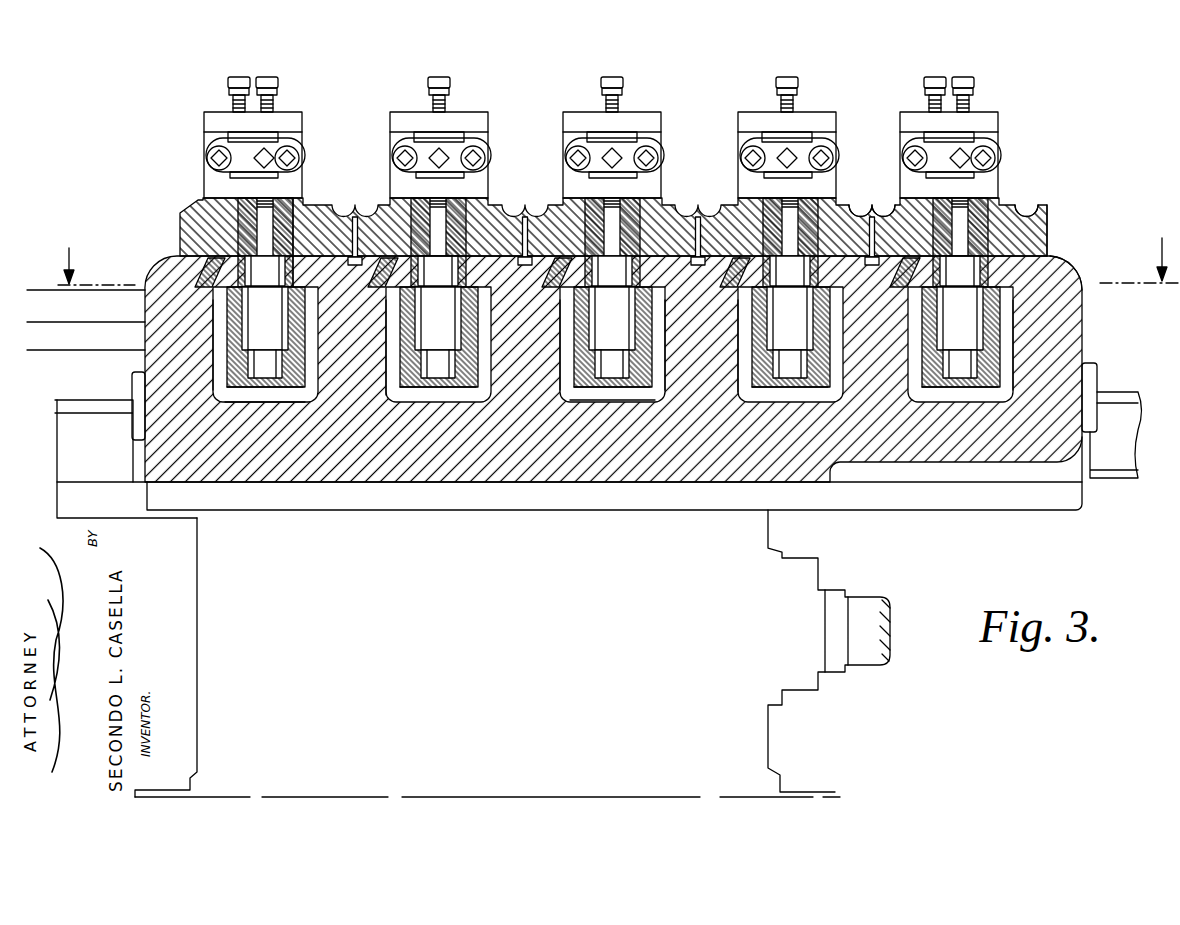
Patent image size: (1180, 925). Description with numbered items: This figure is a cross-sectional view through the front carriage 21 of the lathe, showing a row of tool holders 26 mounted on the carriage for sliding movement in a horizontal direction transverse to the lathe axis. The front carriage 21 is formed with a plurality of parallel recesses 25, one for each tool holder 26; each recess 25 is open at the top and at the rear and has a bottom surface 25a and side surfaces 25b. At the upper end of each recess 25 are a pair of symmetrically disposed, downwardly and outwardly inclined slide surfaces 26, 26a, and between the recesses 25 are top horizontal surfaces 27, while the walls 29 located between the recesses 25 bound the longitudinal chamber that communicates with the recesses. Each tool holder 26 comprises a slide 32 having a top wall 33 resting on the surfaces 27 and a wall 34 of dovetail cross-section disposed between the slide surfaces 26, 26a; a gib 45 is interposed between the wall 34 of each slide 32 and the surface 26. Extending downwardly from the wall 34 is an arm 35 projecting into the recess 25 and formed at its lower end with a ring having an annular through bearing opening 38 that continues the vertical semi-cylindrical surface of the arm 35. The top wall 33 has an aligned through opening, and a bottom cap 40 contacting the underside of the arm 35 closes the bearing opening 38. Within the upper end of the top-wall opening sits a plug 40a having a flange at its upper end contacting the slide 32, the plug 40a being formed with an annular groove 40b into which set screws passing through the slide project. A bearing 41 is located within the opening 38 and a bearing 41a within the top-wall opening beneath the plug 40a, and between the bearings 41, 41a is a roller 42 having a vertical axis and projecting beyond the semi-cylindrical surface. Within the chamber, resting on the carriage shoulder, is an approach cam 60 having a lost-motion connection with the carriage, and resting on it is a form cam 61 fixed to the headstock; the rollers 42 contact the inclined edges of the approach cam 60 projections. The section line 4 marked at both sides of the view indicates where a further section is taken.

The section line 4- 4 is at (619, 247).
The front carriage 21 is at (1068, 327).
The recess 25 is at (632, 392).
The bottom surface 25a is at (590, 398).
The side surfaces 25b is at (562, 400).
The tool holder 26 is at (553, 209).
The slide surface 26a is at (698, 258).
The top horizontal surfaces 27 is at (848, 222).
The walls 29 is at (872, 355).
The slide 32 is at (1040, 199).
The top wall 33 is at (1023, 233).
The wall of dovetail cross-section 34 is at (1050, 277).
The arm 35 is at (217, 400).
The bearing opening 38 is at (393, 400).
The bottom cap 40 is at (745, 395).
The plug 40a is at (980, 228).
The annular groove 40b is at (288, 228).
The bearing 41 is at (437, 400).
The bearing 41a is at (463, 262).
The roller 42 is at (612, 332).
The gib 45 is at (895, 215).
The approach cam 60 is at (80, 338).
The form cam 61 is at (43, 305).